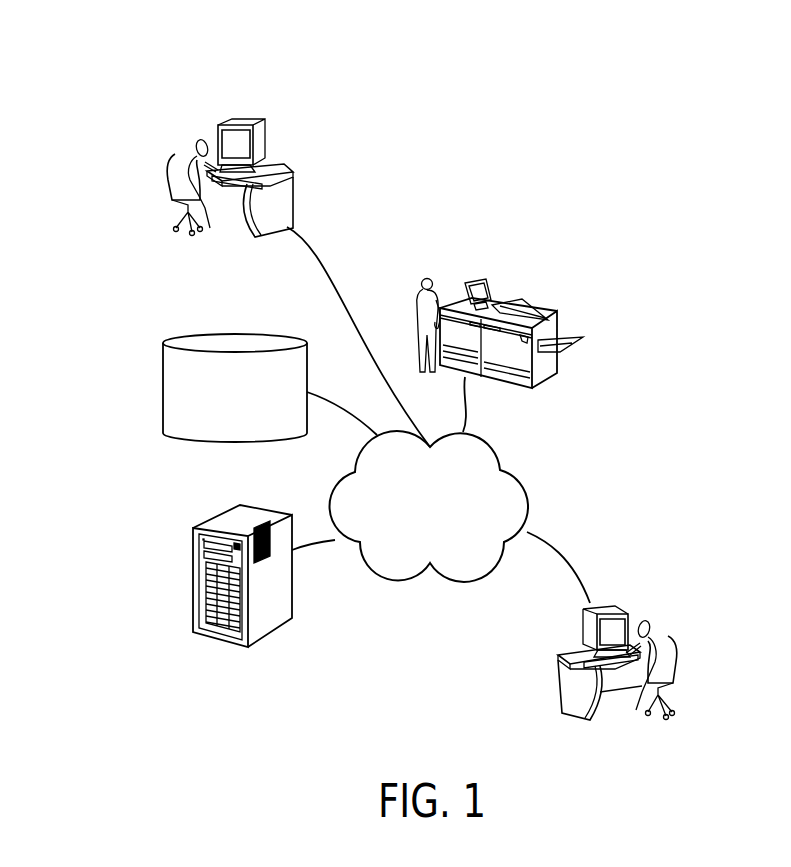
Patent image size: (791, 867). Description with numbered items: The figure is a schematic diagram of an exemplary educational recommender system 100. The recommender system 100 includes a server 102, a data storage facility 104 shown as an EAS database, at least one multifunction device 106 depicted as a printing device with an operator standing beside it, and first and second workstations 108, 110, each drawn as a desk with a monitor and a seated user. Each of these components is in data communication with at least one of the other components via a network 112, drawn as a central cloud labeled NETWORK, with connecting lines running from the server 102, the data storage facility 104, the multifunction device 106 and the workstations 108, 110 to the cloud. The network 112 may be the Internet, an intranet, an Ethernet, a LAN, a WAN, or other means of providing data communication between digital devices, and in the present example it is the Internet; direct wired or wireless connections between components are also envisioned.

The educational recommender system 100 is at (104, 62).
The server 102 is at (223, 515).
The data storage facility 104 is at (252, 333).
The multifunction device 106 is at (543, 312).
The first workstation 108 is at (252, 122).
The second workstation 110 is at (627, 606).
The network 112 is at (528, 493).